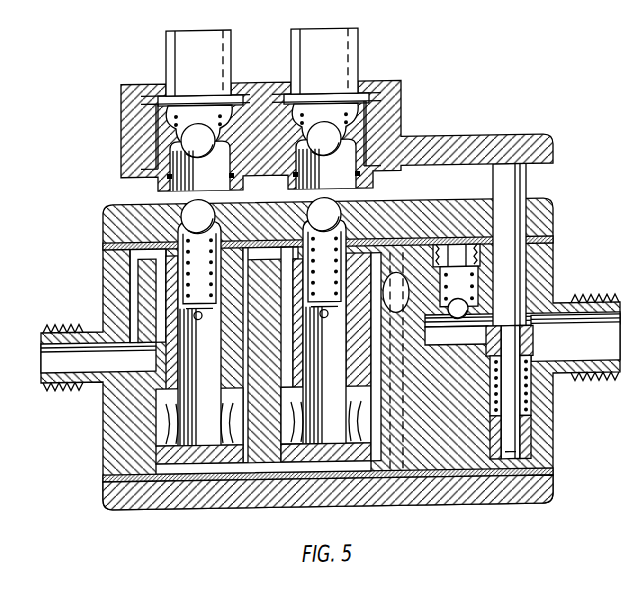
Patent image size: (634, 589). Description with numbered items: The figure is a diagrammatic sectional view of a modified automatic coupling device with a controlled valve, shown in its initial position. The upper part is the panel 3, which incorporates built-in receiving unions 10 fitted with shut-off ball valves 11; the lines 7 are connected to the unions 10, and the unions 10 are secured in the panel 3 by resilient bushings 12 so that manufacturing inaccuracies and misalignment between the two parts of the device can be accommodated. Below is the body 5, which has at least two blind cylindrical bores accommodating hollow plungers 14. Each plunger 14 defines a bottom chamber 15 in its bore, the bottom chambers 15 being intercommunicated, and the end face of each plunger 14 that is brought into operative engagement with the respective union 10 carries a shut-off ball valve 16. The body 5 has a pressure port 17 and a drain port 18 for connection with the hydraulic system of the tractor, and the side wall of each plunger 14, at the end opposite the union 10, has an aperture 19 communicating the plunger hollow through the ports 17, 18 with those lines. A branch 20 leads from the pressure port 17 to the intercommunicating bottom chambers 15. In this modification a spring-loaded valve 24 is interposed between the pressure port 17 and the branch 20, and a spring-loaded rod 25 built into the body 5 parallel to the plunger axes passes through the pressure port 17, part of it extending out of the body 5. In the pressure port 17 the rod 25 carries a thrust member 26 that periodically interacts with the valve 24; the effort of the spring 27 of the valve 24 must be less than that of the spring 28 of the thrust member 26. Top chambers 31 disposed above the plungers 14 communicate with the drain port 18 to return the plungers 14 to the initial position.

The panel 3 is at (446, 140).
The body 5 is at (537, 241).
The lines 7 is at (283, 48).
The receiving unions 10 is at (160, 92).
The shut-off ball valves 11 is at (196, 142).
The resilient bushings 12 is at (135, 110).
The hollow plungers 14 is at (150, 268).
The bottom chamber 15 is at (210, 465).
The shut-off ball valves 16 is at (302, 200).
The pressure port 17 is at (600, 340).
The drain port 18 is at (52, 345).
The aperture 19 is at (165, 405).
The branch 20 is at (398, 455).
The spring-loaded valve 24 is at (452, 316).
The spring-loaded rod 25 is at (510, 192).
The thrust member 26 is at (536, 345).
The spring 27 is at (426, 326).
The spring 28 is at (525, 403).
The top chambers 31 is at (368, 250).